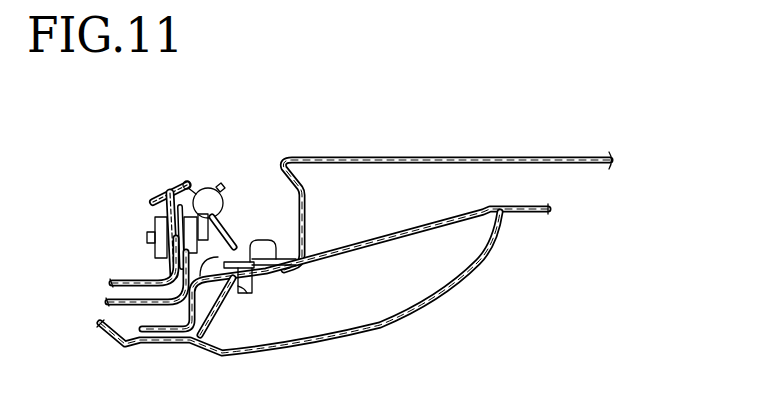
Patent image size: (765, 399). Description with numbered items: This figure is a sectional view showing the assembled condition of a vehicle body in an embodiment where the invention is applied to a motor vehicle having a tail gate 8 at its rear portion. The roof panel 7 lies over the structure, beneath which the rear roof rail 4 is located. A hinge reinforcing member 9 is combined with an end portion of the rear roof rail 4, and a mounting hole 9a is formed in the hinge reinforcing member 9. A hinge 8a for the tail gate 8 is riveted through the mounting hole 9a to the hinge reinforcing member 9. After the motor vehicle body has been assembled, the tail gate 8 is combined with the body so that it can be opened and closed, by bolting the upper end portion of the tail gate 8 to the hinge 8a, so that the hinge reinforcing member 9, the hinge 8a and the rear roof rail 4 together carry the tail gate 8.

The rear roof rail 4 is at (362, 335).
The roof panel 7 is at (424, 157).
The tail gate 8 is at (133, 281).
The hinge 8a is at (259, 243).
The hinge reinforcing member 9 is at (387, 242).
The mounting hole 9a is at (247, 295).